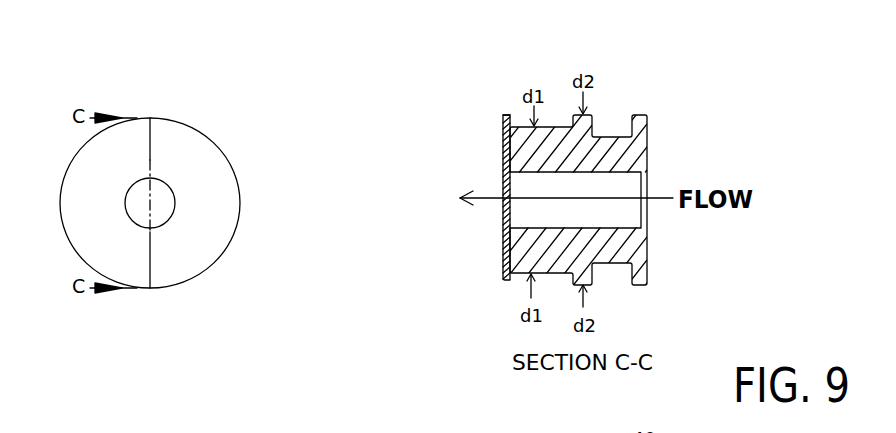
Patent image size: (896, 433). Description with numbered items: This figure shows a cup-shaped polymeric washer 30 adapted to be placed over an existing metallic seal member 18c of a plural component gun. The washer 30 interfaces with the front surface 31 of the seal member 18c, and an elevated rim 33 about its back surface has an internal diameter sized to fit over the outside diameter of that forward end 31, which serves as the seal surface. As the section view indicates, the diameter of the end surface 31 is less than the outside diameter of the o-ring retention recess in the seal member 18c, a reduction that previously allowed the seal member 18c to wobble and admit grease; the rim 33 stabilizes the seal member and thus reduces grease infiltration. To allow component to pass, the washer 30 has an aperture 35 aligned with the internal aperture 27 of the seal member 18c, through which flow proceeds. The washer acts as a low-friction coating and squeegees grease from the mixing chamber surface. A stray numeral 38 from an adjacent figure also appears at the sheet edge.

The polymeric washer 30 is at (214, 140).
The aperture 35 is at (166, 224).
The elevated rim 33 is at (512, 121).
The metallic seal member 18c is at (555, 137).
The front surface 31 is at (506, 135).
The internal aperture 27 is at (634, 197).
The component of adjacent figure 38 is at (558, 432).